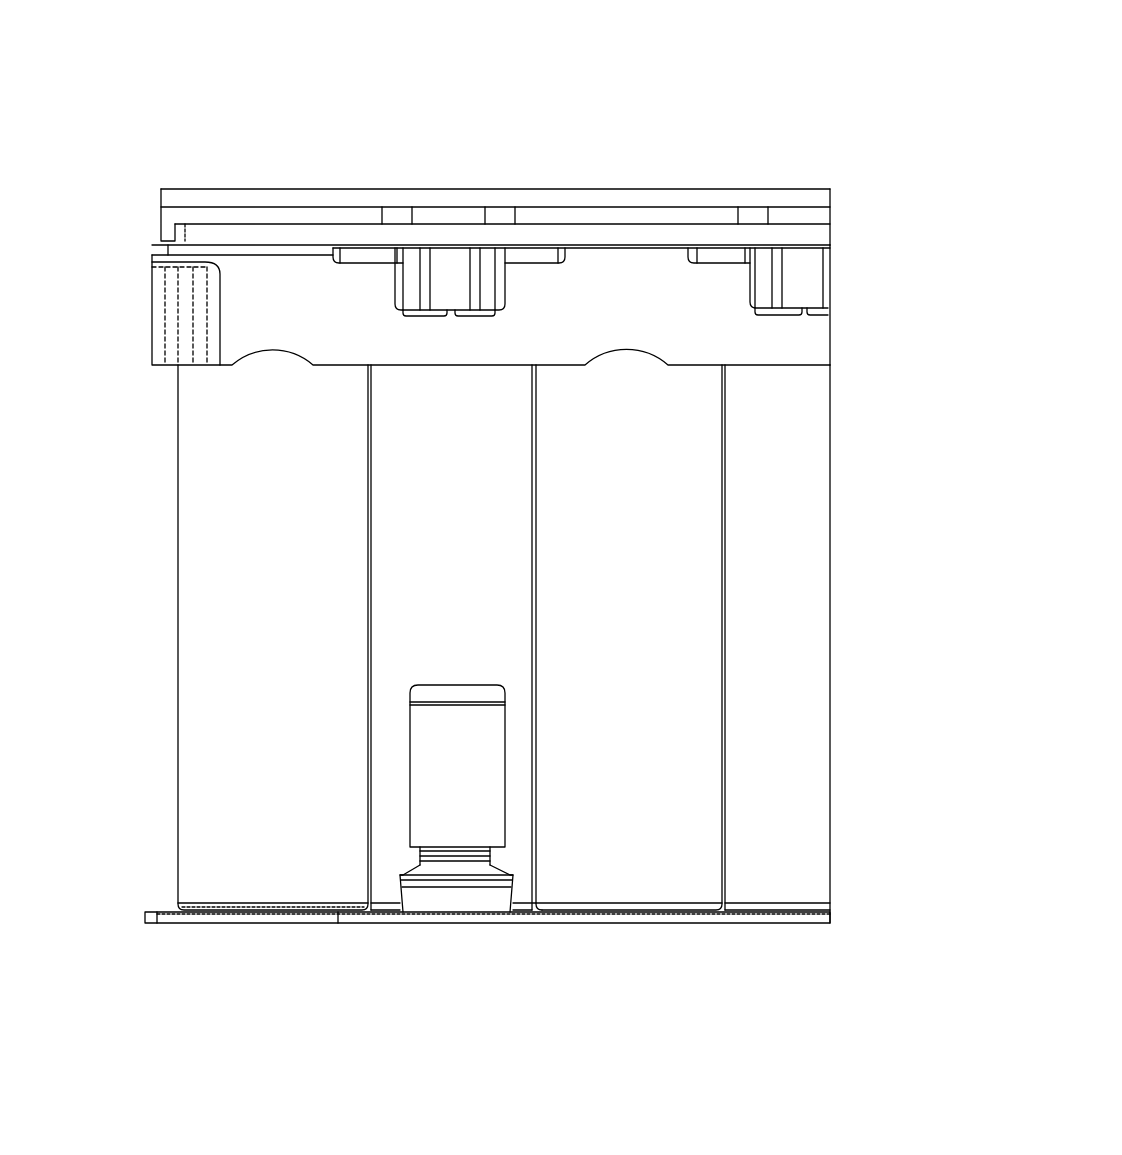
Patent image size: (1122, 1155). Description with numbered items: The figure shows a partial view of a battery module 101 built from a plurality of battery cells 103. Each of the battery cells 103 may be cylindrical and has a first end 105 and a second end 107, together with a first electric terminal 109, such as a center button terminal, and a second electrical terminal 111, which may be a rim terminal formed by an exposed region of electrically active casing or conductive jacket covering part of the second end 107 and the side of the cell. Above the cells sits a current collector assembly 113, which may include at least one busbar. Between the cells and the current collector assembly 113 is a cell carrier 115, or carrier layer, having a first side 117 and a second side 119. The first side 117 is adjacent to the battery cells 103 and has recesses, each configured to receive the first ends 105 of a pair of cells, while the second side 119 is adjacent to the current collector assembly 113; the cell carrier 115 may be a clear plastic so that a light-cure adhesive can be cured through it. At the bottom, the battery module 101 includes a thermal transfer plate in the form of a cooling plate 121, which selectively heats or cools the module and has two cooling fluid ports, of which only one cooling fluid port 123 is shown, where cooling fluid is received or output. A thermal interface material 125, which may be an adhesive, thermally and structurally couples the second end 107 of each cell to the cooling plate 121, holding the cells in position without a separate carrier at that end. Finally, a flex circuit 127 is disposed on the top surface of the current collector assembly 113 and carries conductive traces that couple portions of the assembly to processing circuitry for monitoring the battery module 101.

The battery module 101 is at (740, 56).
The battery cells 103 is at (192, 470).
The first end 105 is at (116, 217).
The second end 107 is at (133, 922).
The first electric terminal 109 is at (292, 236).
The second electrical terminal 111 is at (324, 236).
The current collector assembly 113 is at (153, 205).
The cell carrier 115 is at (238, 303).
The first side 117 is at (810, 365).
The second side 119 is at (803, 248).
The cooling plate 121 is at (187, 922).
The cooling fluid port 123 is at (478, 833).
The thermal interface material 125 is at (790, 903).
The flex circuit 127 is at (765, 197).